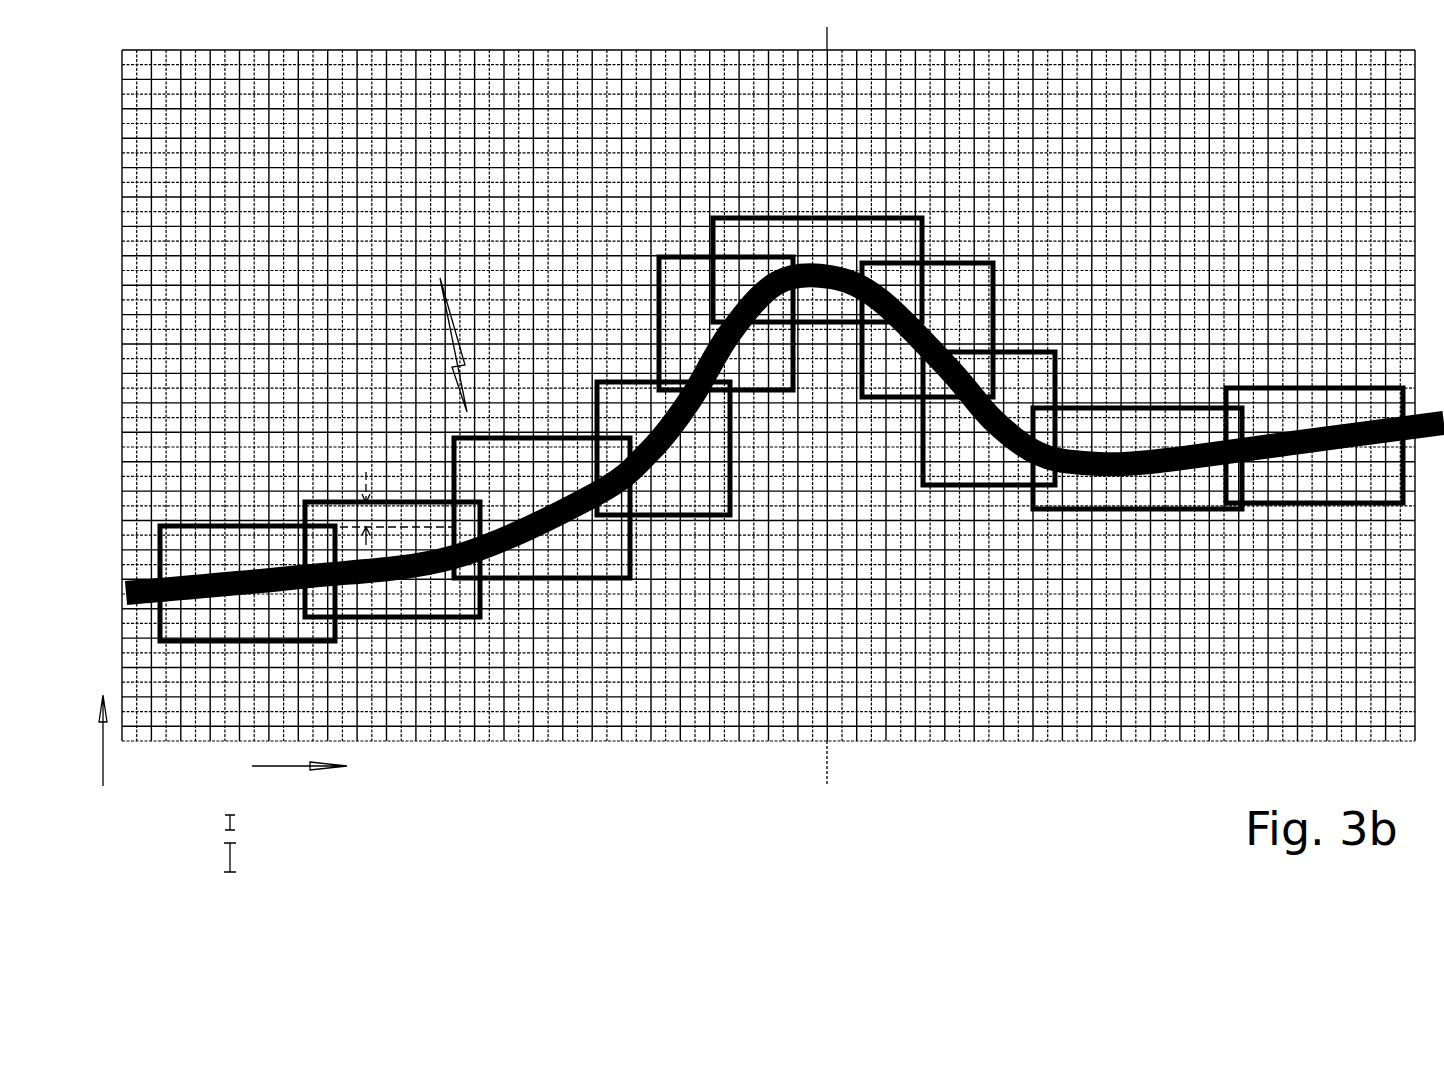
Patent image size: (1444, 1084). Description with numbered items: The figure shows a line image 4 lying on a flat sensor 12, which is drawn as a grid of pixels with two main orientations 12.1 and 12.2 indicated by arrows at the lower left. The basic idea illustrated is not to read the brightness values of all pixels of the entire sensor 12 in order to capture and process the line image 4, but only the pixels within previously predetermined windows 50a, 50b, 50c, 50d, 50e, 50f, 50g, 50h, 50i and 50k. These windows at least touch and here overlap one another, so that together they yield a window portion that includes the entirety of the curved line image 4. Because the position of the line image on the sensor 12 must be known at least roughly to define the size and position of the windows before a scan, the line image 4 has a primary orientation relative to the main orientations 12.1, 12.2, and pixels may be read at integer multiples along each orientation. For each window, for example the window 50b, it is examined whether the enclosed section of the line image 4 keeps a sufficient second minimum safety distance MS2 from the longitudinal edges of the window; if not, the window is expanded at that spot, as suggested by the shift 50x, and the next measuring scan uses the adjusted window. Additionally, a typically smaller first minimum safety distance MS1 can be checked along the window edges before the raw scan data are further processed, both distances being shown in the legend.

The sensor 12 is at (595, 742).
The main orientation 12.1 is at (329, 772).
The main orientation 12.2 is at (132, 744).
The line image 4 is at (1140, 450).
The window 50a is at (248, 641).
The window 50b is at (393, 617).
The window 50c is at (540, 578).
The window 50d is at (685, 515).
The window 50e is at (763, 390).
The window 50f is at (875, 219).
The window 50g is at (982, 263).
The window 50h is at (1040, 352).
The window 50i is at (1135, 509).
The window 50k is at (1333, 503).
The sensor window displacement 50x is at (448, 327).
The first minimum safety distance MS1 is at (313, 650).
The second minimum safety distance MS2 is at (313, 642).